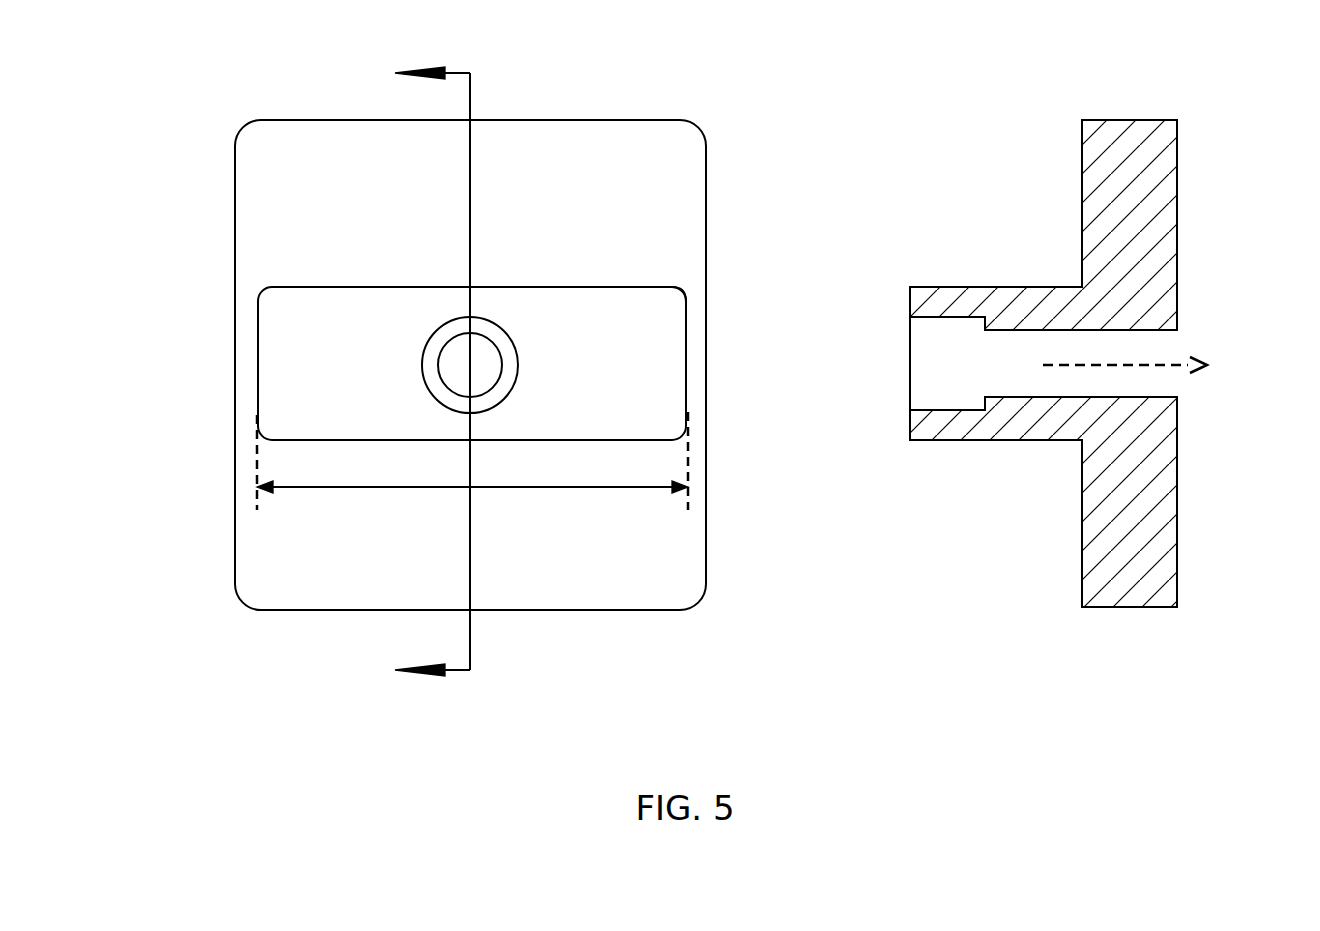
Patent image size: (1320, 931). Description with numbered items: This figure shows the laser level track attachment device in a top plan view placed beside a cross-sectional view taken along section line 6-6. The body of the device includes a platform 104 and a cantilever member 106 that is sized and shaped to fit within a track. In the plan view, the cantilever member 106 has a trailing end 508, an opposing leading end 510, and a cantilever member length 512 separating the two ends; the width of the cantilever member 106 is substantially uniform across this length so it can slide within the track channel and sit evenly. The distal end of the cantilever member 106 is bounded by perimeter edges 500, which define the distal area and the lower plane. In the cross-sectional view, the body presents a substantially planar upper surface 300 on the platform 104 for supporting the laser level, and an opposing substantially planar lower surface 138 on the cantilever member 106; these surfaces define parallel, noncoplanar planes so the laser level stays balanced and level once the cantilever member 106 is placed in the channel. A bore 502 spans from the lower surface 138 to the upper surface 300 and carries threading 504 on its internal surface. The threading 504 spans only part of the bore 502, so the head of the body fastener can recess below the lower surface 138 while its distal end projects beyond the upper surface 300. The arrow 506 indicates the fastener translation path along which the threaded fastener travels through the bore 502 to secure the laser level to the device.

The section line 6- 6 is at (421, 371).
The platform 104 is at (282, 528).
The cantilever member 106 is at (375, 338).
The lower surface 138 is at (654, 322).
The upper surface 300 is at (1184, 162).
The perimeter edges 500 is at (546, 286).
The bore 502 is at (975, 370).
The threading 504 is at (1043, 338).
The fastener translation path 506 is at (1168, 365).
The trailing end 508 is at (687, 368).
The leading end 510 is at (257, 370).
The cantilever member length 512 is at (372, 487).